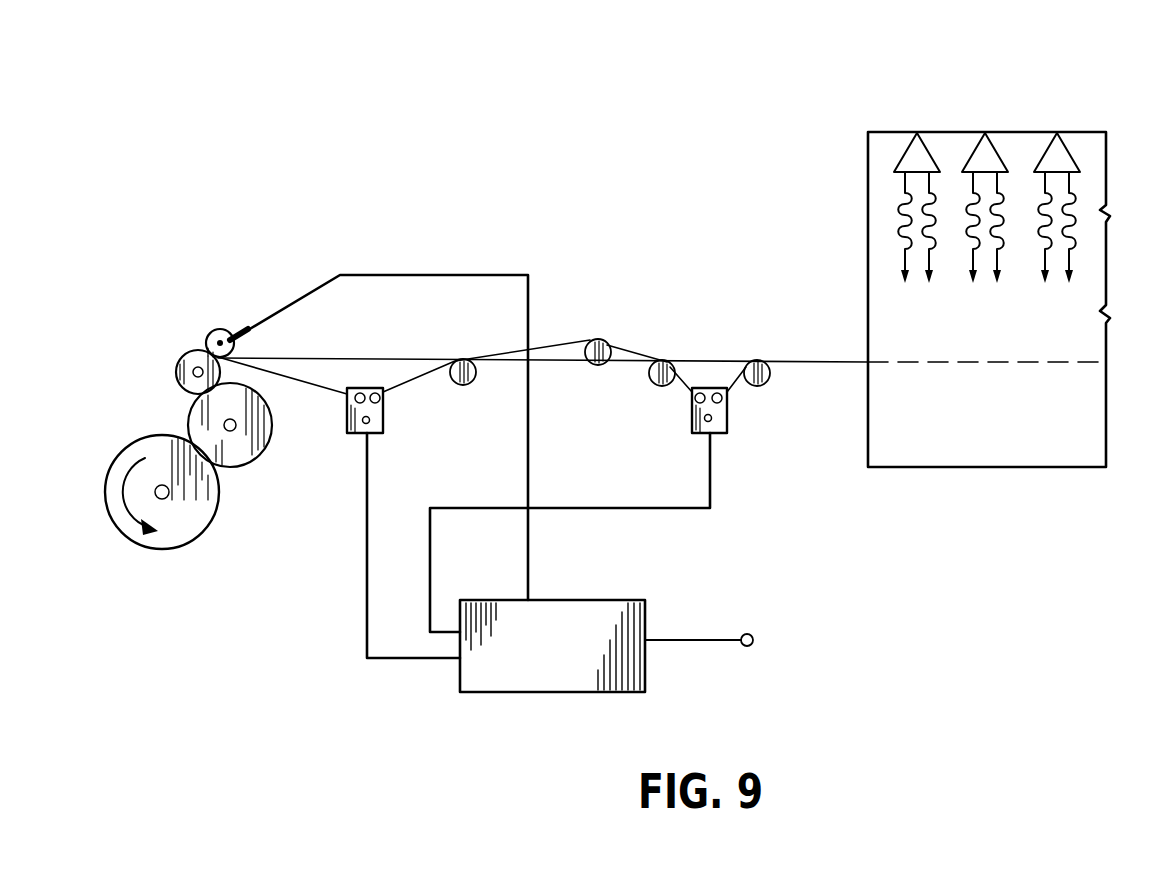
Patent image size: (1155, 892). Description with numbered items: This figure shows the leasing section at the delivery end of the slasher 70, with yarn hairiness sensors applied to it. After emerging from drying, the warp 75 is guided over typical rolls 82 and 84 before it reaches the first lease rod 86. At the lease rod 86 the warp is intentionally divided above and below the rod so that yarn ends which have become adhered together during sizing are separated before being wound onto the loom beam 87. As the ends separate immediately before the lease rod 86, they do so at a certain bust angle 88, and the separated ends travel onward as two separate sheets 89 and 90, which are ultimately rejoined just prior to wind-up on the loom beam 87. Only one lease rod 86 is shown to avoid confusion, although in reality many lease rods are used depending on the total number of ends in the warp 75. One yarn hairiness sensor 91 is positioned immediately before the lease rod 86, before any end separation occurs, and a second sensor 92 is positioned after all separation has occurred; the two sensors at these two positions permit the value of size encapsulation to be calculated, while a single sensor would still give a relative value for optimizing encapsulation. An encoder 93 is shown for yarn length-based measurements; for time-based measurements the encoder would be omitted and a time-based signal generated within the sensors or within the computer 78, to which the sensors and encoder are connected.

The slasher 70 is at (969, 126).
The warp 75 is at (719, 356).
The computer 78 is at (561, 636).
The roll 82 is at (769, 379).
The roll 84 is at (653, 383).
The first lease rod 86 is at (603, 339).
The loom beam 87 is at (178, 498).
The bust angle 88 is at (645, 349).
The separate sheet 89 is at (567, 370).
The separate sheet 90 is at (545, 338).
The yarn hairiness sensor 91 is at (714, 424).
The second sensor 92 is at (346, 424).
The encoder 93 is at (216, 329).